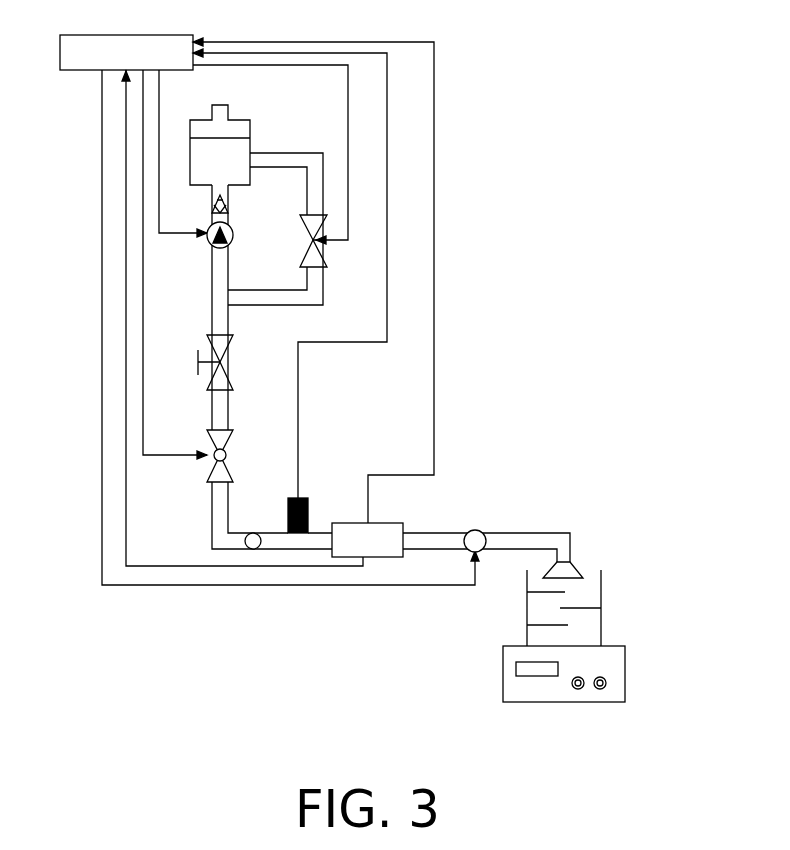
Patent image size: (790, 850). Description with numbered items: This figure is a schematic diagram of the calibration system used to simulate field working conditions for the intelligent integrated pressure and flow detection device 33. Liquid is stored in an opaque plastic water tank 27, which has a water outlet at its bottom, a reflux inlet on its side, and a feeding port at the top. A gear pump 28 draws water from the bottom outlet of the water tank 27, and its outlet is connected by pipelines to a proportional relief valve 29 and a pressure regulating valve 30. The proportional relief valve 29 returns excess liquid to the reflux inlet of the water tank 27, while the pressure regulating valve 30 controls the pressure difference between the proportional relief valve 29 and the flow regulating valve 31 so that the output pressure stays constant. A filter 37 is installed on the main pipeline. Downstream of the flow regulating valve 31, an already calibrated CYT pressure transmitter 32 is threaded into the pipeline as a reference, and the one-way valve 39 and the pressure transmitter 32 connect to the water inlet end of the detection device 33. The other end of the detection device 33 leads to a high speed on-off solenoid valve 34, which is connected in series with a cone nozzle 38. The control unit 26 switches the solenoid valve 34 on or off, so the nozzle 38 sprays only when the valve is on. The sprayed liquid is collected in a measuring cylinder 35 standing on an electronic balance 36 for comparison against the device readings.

The control unit 26 is at (123, 52).
The water tank 27 is at (222, 140).
The pump 28 is at (213, 245).
The proportional relief valve 29 is at (320, 255).
The pressure regulating valve 30 is at (217, 362).
The flow regulating valve 31 is at (218, 460).
The CYT 101 pressure transmitter 32 is at (307, 500).
The intelligent integrated pressure and flow detection device 33 is at (377, 538).
The solenoid valve 34 is at (477, 532).
The measuring cylinder 35 is at (590, 625).
The electronic balance 36 is at (550, 686).
The filter 37 is at (227, 205).
The nozzle 38 is at (565, 573).
The one-way valve 39 is at (255, 535).